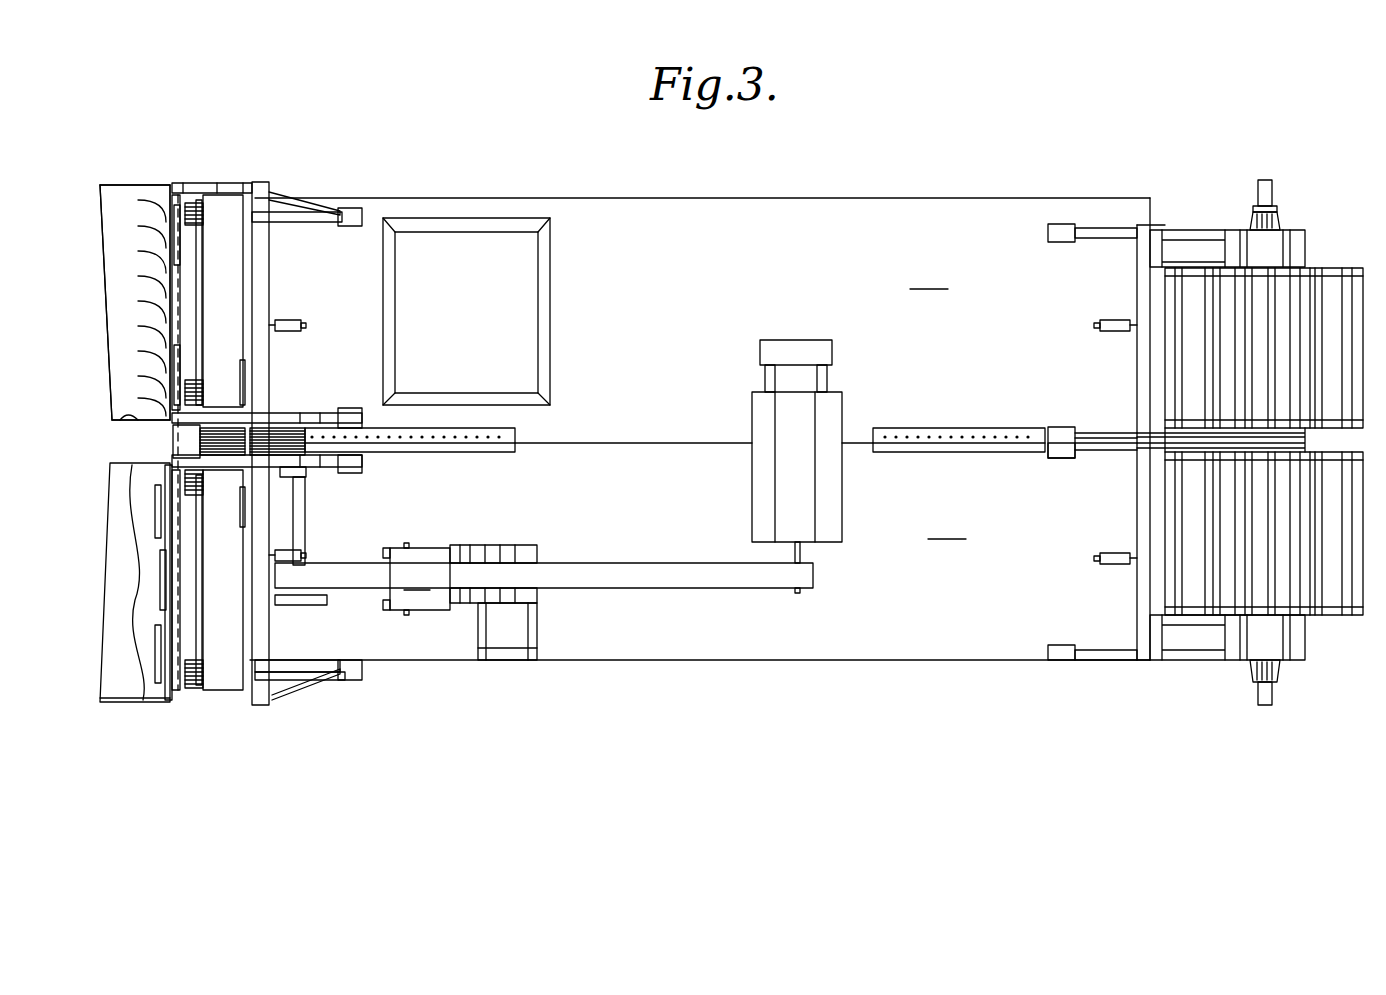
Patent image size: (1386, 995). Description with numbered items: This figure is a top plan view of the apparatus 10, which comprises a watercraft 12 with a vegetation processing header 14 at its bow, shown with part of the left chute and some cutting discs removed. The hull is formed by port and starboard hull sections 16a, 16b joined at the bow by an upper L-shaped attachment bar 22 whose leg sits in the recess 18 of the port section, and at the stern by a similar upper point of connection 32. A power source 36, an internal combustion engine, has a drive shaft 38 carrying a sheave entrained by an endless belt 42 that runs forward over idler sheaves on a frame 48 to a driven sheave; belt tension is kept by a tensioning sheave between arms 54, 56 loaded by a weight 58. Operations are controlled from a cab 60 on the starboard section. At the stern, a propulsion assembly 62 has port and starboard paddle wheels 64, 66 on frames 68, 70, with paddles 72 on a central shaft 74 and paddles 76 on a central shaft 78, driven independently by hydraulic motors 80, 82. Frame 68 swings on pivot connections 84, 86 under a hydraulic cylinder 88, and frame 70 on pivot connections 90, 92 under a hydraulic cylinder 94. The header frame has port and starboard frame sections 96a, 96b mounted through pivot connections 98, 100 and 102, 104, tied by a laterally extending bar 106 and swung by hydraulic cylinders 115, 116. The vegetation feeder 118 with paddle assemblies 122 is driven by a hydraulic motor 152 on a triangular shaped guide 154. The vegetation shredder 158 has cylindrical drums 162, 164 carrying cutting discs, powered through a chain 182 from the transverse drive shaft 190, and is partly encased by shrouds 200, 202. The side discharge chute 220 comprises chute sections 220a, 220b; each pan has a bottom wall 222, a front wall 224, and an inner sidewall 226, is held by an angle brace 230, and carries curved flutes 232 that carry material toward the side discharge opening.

The apparatus 10 is at (828, 190).
The watercraft 12 is at (1040, 665).
The vegetation processing header 14 is at (300, 198).
The port hull section 16a is at (947, 528).
The starboard hull section 16b is at (929, 278).
The recess 18 is at (490, 455).
The upper L-shaped attachment bar 22 is at (510, 437).
The upper point of connection 32 is at (975, 430).
The power source 36 is at (768, 462).
The drive shaft 38 is at (800, 553).
The endless belt 42 is at (740, 590).
The frame 48 is at (538, 624).
The arm 54 is at (388, 606).
The arm 56 is at (390, 548).
The weight 58 is at (420, 579).
The cab 60 is at (545, 300).
The propulsion assembly 62 is at (1308, 230).
The port paddle wheel 64 is at (1366, 600).
The starboard paddle wheel 66 is at (1366, 272).
The frame 68 is at (1132, 660).
The frame 70 is at (1173, 230).
The paddles 72 is at (1340, 600).
The central shaft 74 is at (1265, 706).
The paddles 76 is at (1342, 300).
The central shaft 78 is at (1262, 180).
The hydraulic motor 80 is at (1252, 670).
The hydraulic motor 82 is at (1280, 222).
The pivot connection 84 is at (1062, 645).
The pivot connection 86 is at (1062, 460).
The hydraulic cylinder 88 is at (1118, 553).
The pivot connection 90 is at (1062, 426).
The pivot connection 92 is at (1060, 243).
The hydraulic cylinder 94 is at (1116, 320).
The port frame section 96a is at (278, 698).
The starboard frame section 96b is at (268, 182).
The pivot connection 98 is at (356, 681).
The pivot connection 100 is at (360, 472).
The pivot connection 102 is at (346, 408).
The pivot connection 104 is at (345, 227).
The laterally extending bar 106 is at (250, 380).
The hydraulic cylinder 115 is at (300, 555).
The hydraulic cylinder 116 is at (296, 330).
The vegetation feeder 118 is at (138, 556).
The paddle assemblies 122 is at (156, 510).
The hydraulic motor 152 is at (168, 470).
The triangular shaped guide 154 is at (185, 442).
The vegetation shredder 158 is at (195, 205).
The cylindrical drum 162 is at (200, 624).
The cylindrical drum 164 is at (200, 287).
The chain 182 is at (290, 477).
The transverse drive shaft 190 is at (306, 519).
The port shroud 200 is at (240, 700).
The starboard shroud 202 is at (245, 283).
The side discharge chute 220 is at (110, 413).
The port chute section 220a is at (100, 700).
The starboard chute section 220b is at (120, 170).
The bottom wall 222 is at (106, 222).
The front wall 224 is at (110, 305).
The inner sidewall 226 is at (125, 422).
The angle brace 230 is at (152, 185).
The flutes 232 is at (140, 274).